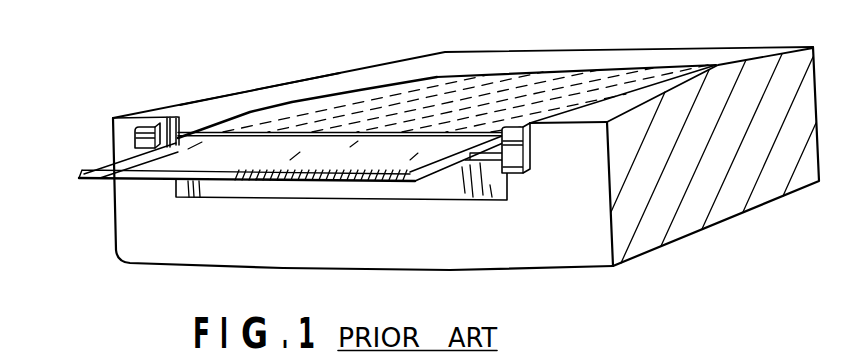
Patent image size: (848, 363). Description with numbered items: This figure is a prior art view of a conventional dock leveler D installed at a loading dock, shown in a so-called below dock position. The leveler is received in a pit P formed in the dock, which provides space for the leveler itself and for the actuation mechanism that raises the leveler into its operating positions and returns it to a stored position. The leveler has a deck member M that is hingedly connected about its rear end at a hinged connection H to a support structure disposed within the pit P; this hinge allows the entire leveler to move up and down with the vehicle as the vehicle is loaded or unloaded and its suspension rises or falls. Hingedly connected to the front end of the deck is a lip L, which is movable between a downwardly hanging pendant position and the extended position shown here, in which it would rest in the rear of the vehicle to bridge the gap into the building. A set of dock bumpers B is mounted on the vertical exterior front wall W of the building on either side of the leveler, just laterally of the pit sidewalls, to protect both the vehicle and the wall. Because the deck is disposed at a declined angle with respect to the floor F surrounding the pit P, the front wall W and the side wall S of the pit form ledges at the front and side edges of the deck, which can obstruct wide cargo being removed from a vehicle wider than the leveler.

The pit P is at (300, 97).
The dock leveler D is at (363, 57).
The deck member M is at (490, 97).
The hinged connection H is at (574, 58).
The side wall of the pit S is at (201, 121).
The front wall of the building W is at (122, 134).
The dock bumpers B is at (135, 148).
The lip L is at (177, 181).
The floor F is at (673, 85).